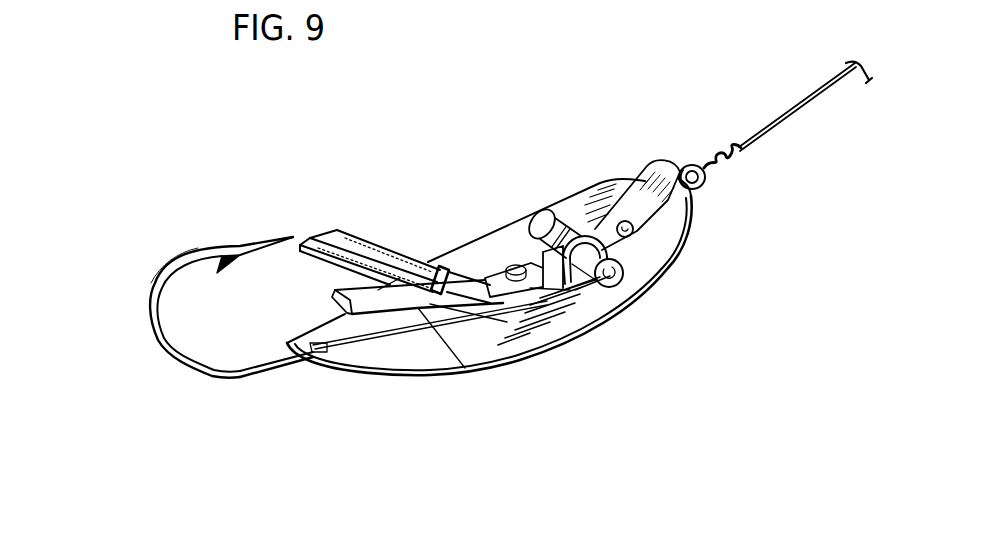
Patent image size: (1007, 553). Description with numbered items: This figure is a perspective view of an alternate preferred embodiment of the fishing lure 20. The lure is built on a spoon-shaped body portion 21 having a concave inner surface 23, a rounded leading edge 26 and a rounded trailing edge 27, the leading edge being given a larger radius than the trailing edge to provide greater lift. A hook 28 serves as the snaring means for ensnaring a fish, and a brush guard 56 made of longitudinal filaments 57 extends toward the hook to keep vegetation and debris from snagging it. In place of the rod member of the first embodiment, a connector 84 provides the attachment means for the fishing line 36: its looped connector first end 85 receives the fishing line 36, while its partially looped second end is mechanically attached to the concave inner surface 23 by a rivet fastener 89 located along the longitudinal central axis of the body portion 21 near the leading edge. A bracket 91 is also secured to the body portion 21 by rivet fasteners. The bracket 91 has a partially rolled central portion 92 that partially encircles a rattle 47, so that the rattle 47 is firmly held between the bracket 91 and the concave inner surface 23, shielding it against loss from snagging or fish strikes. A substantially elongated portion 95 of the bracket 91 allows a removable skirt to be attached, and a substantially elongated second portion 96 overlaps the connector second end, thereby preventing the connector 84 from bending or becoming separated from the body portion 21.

The fishing lure 20 is at (121, 195).
The body portion 21 is at (690, 249).
The concave inner surface 23 is at (420, 352).
The rounded leading edge 26 is at (698, 202).
The rounded trailing edge 27 is at (305, 364).
The hook 28 is at (153, 314).
The fishing line 36 is at (782, 118).
The rattle 47 is at (535, 205).
The brush guard 56 is at (347, 220).
The longitudinal filaments 57 is at (379, 243).
The connector 84 is at (684, 162).
The looped connector first end 85 is at (706, 182).
The rivet fastener 89 is at (633, 240).
The bracket 91 is at (407, 292).
The partially rolled central portion 92 is at (547, 262).
The substantially elongated portion 95 is at (337, 289).
The substantially elongated second portion 96 is at (620, 193).